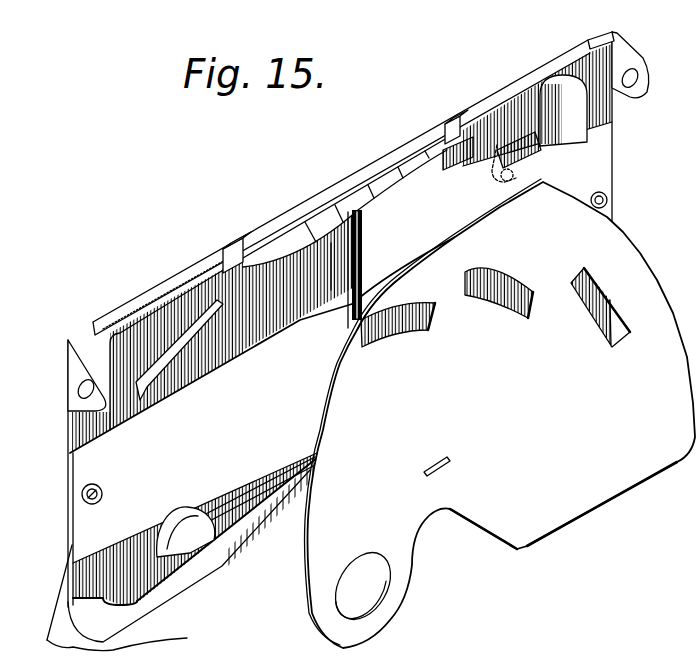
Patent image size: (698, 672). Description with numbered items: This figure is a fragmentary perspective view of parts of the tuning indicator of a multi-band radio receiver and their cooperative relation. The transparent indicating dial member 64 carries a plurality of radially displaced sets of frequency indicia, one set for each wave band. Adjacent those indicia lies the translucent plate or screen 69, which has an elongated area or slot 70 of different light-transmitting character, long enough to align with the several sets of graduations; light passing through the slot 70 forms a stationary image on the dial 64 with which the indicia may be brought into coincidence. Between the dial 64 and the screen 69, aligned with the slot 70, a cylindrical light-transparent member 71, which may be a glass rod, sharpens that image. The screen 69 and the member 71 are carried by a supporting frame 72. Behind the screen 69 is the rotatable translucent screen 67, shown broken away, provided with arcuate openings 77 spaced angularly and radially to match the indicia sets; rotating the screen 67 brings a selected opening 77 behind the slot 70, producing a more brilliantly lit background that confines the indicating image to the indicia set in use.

The transparent indicating dial member 64 is at (53, 600).
The rotatable translucent plate or screen 67 is at (620, 228).
The translucent plate or screen 69 is at (246, 349).
The elongated area or slot 70 is at (347, 332).
The cylindrical light-transparent member 71 is at (362, 255).
The supporting frame 72 is at (158, 286).
The arcuate openings 77 is at (570, 283).